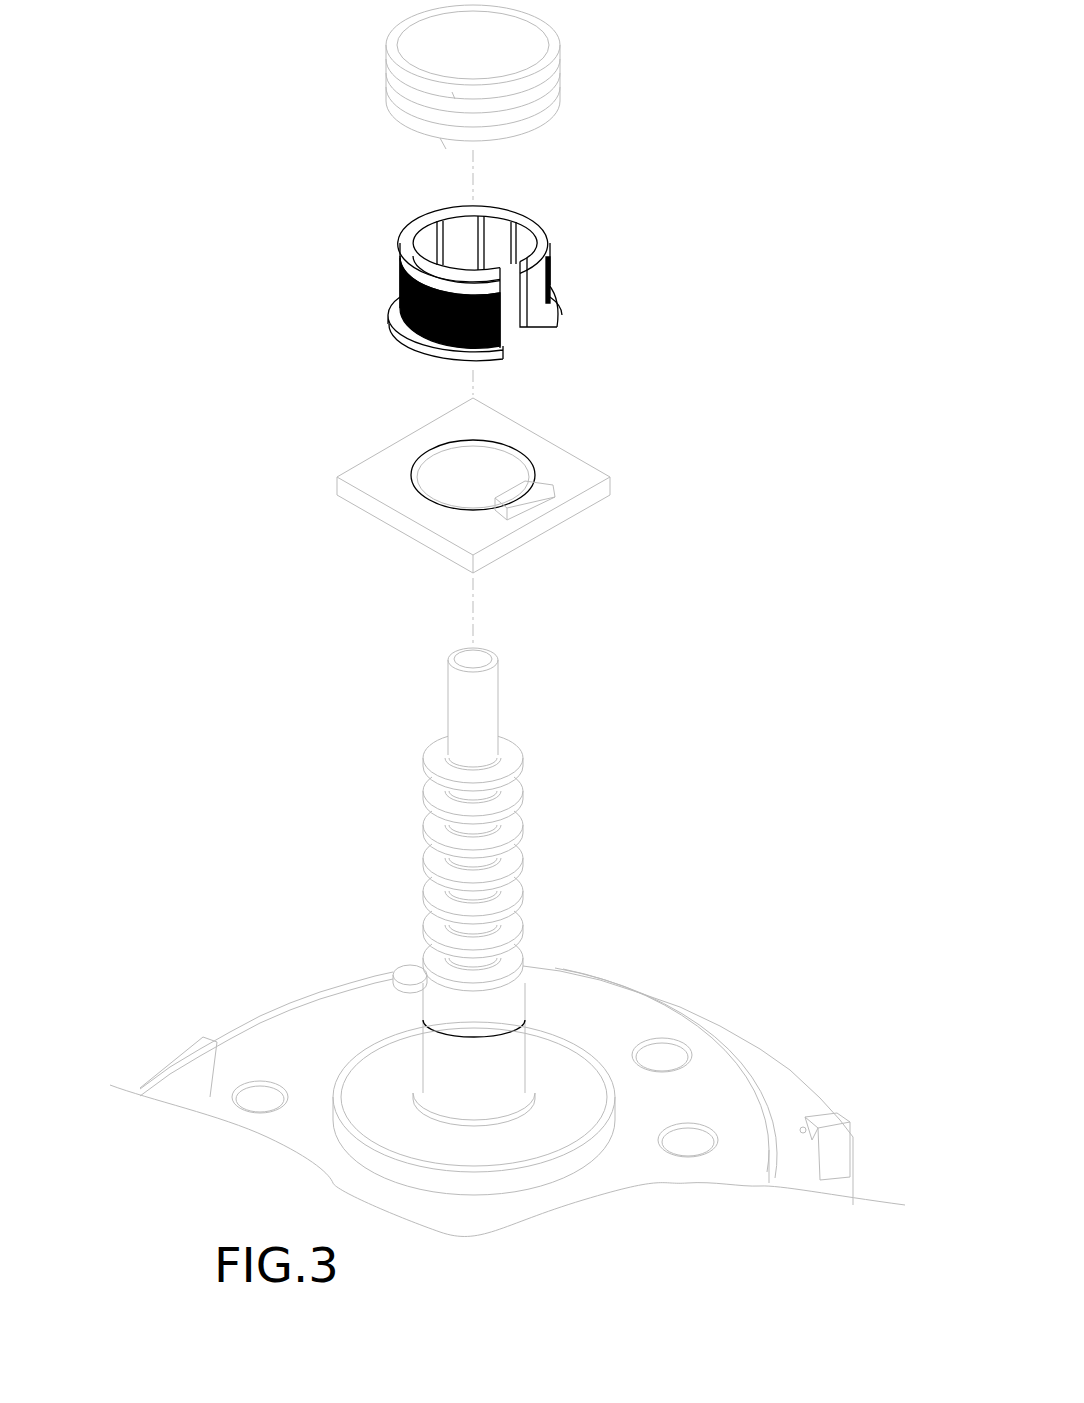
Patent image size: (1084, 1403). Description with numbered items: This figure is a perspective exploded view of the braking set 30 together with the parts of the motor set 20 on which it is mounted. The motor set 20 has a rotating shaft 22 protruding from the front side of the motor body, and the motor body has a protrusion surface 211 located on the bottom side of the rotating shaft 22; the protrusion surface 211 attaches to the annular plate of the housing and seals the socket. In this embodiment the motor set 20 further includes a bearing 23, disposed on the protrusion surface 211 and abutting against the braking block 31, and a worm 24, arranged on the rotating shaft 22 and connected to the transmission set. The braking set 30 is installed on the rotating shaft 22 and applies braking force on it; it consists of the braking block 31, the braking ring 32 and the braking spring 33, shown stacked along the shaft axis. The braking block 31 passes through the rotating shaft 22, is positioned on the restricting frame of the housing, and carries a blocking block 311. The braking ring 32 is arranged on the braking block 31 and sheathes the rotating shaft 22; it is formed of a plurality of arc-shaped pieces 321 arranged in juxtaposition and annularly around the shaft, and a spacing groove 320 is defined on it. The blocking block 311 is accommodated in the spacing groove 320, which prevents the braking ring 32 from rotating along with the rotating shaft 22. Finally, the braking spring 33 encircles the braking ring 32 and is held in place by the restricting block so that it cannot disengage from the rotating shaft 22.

The motor set 20 is at (507, 1074).
The protrusion surface 211 is at (312, 1037).
The rotating shaft 22 is at (483, 693).
The bearing 23 is at (565, 1165).
The worm 24 is at (515, 848).
The braking set 30 is at (680, 455).
The braking block 31 is at (503, 498).
The blocking block 311 is at (525, 497).
The braking ring 32 is at (527, 280).
The spacing groove 320 is at (512, 342).
The arc-shaped pieces 321 is at (538, 323).
The braking spring 33 is at (551, 66).